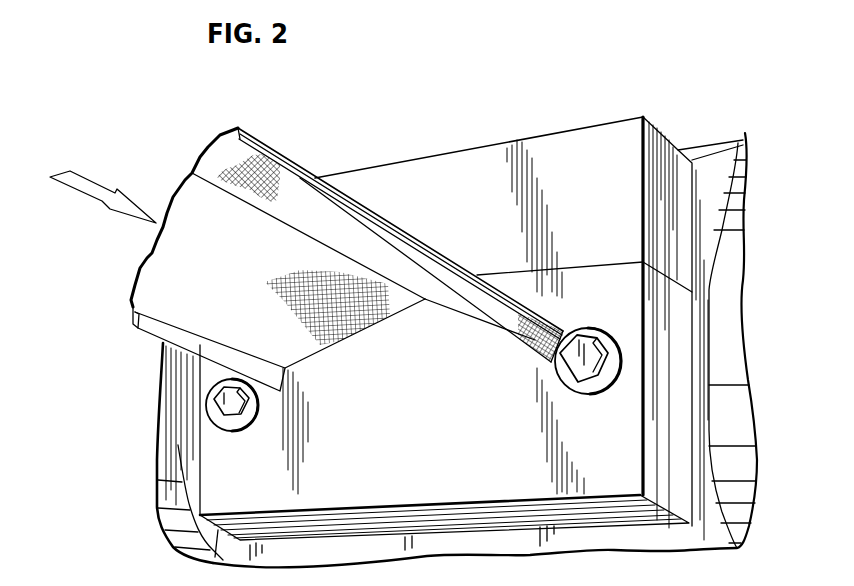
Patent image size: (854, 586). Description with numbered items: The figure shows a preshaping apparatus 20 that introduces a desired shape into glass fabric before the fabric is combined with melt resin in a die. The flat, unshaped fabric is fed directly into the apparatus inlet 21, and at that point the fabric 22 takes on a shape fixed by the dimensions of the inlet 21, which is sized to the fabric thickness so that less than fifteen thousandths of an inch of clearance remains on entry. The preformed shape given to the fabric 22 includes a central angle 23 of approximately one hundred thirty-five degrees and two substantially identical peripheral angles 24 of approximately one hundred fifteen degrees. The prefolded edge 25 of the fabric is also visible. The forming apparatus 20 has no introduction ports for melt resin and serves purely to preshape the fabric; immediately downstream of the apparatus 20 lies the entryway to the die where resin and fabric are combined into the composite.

The preshaping apparatus 20 is at (679, 131).
The apparatus inlet 21 is at (343, 346).
The glass fiber fabric 22 is at (153, 257).
The central angle 23 is at (192, 173).
The peripheral angles 24 is at (235, 350).
The prefolded edge 25 is at (140, 307).